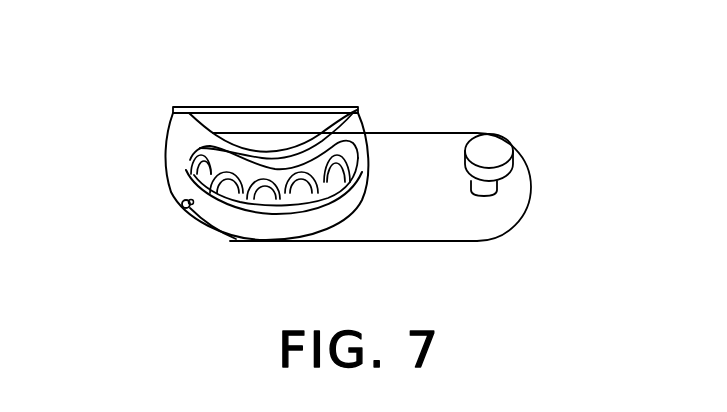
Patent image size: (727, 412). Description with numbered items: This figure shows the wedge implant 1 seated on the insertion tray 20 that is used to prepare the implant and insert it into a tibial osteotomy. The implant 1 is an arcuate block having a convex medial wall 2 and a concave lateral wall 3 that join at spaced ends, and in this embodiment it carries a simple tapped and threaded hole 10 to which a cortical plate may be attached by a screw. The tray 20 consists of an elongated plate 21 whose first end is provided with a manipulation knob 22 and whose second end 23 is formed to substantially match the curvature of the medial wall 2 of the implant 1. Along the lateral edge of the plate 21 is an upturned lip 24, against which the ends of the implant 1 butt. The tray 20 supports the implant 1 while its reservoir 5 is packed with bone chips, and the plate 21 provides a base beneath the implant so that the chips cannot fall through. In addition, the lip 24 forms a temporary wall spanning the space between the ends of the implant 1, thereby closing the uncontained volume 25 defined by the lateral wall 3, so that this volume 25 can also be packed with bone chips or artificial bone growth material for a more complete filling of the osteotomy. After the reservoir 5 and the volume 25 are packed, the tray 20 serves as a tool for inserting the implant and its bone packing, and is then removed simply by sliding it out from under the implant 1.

The implant 1 is at (220, 233).
The medial wall 2 is at (270, 229).
The lateral wall 3 is at (296, 152).
The reservoir 5 is at (318, 153).
The tapped and threaded hole 10 is at (185, 220).
The tray 20 is at (438, 125).
The elongated plate 21 is at (432, 227).
The manipulation knob 22 is at (500, 153).
The second end 23 is at (177, 205).
The upturned lip 24 is at (287, 107).
The uncontained volume 25 is at (247, 137).